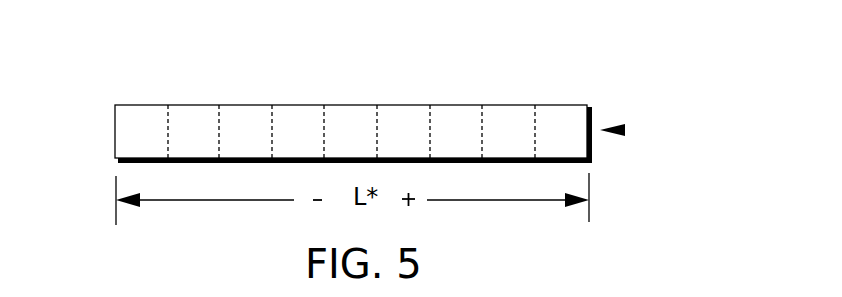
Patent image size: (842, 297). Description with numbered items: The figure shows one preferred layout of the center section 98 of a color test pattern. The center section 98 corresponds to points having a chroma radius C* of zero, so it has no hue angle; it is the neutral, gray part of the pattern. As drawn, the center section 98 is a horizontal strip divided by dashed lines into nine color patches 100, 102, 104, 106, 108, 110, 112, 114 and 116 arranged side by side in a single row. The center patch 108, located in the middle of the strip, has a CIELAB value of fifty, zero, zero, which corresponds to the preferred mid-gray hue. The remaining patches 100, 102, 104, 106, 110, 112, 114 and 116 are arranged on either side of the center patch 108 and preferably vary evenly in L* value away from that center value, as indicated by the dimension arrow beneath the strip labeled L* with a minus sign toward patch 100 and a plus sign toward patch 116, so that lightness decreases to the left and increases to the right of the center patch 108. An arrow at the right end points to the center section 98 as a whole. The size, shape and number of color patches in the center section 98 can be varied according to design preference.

The center section 98 is at (622, 130).
The color patch 100 is at (132, 122).
The color patch 102 is at (185, 118).
The color patch 104 is at (245, 115).
The color patch 106 is at (298, 115).
The center color patch 108 is at (343, 113).
The color patch 110 is at (403, 113).
The color patch 112 is at (457, 115).
The color patch 114 is at (497, 107).
The color patch 116 is at (557, 107).